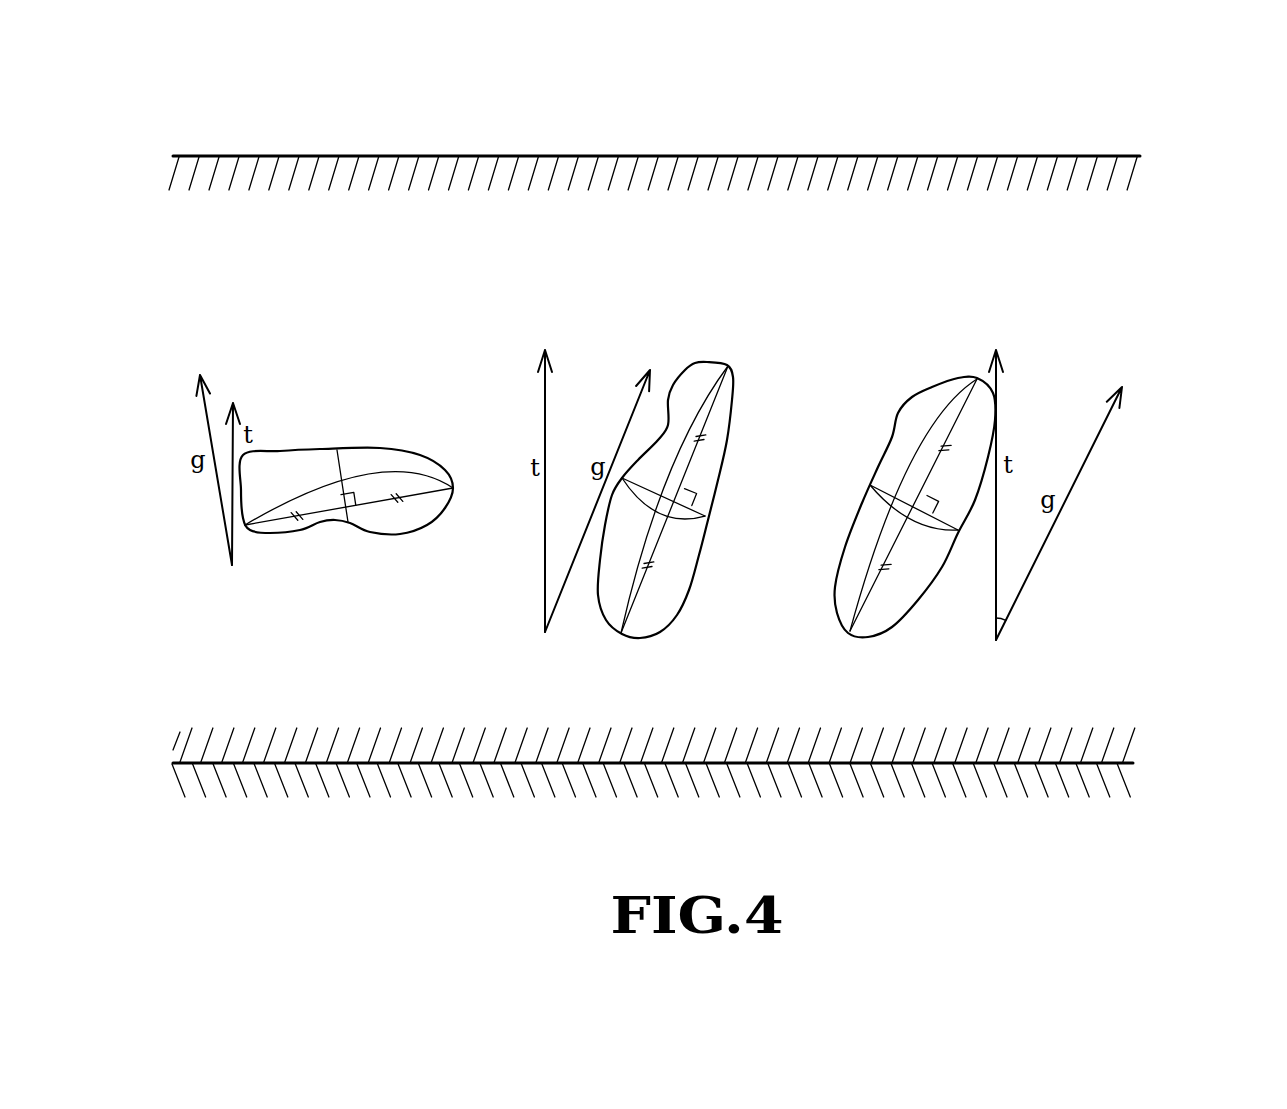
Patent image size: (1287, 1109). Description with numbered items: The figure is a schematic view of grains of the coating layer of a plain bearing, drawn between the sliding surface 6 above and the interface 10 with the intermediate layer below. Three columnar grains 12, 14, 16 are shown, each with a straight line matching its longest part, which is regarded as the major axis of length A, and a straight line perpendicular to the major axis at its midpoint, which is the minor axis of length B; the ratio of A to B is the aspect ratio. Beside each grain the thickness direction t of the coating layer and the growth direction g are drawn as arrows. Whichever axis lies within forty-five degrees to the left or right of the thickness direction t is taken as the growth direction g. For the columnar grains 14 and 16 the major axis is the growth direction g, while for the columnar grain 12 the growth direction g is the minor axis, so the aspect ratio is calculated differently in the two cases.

The sliding surface 6 is at (718, 155).
The interface 10 is at (1140, 763).
The columnar grain 12 is at (372, 543).
The columnar grain 14 is at (685, 613).
The columnar grain 16 is at (922, 627).